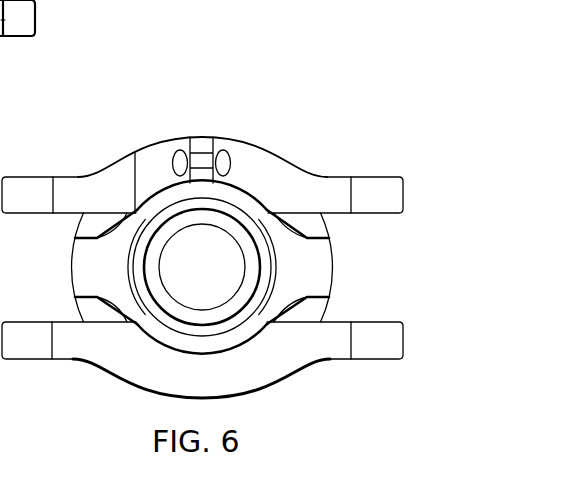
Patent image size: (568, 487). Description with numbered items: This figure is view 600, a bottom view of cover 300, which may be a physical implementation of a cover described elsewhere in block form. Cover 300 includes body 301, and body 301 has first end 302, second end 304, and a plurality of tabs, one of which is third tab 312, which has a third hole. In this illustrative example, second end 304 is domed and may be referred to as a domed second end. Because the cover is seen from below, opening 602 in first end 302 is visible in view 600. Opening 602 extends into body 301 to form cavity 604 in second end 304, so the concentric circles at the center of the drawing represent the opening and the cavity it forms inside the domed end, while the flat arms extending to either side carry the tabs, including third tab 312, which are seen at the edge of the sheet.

The third tab 312 is at (26, 19).
The view 600 is at (328, 55).
The cover 300 is at (245, 89).
The body 301 is at (287, 143).
The first end 302 is at (120, 396).
The second end 304 is at (342, 264).
The opening 602 is at (83, 267).
The cavity 604 is at (223, 282).